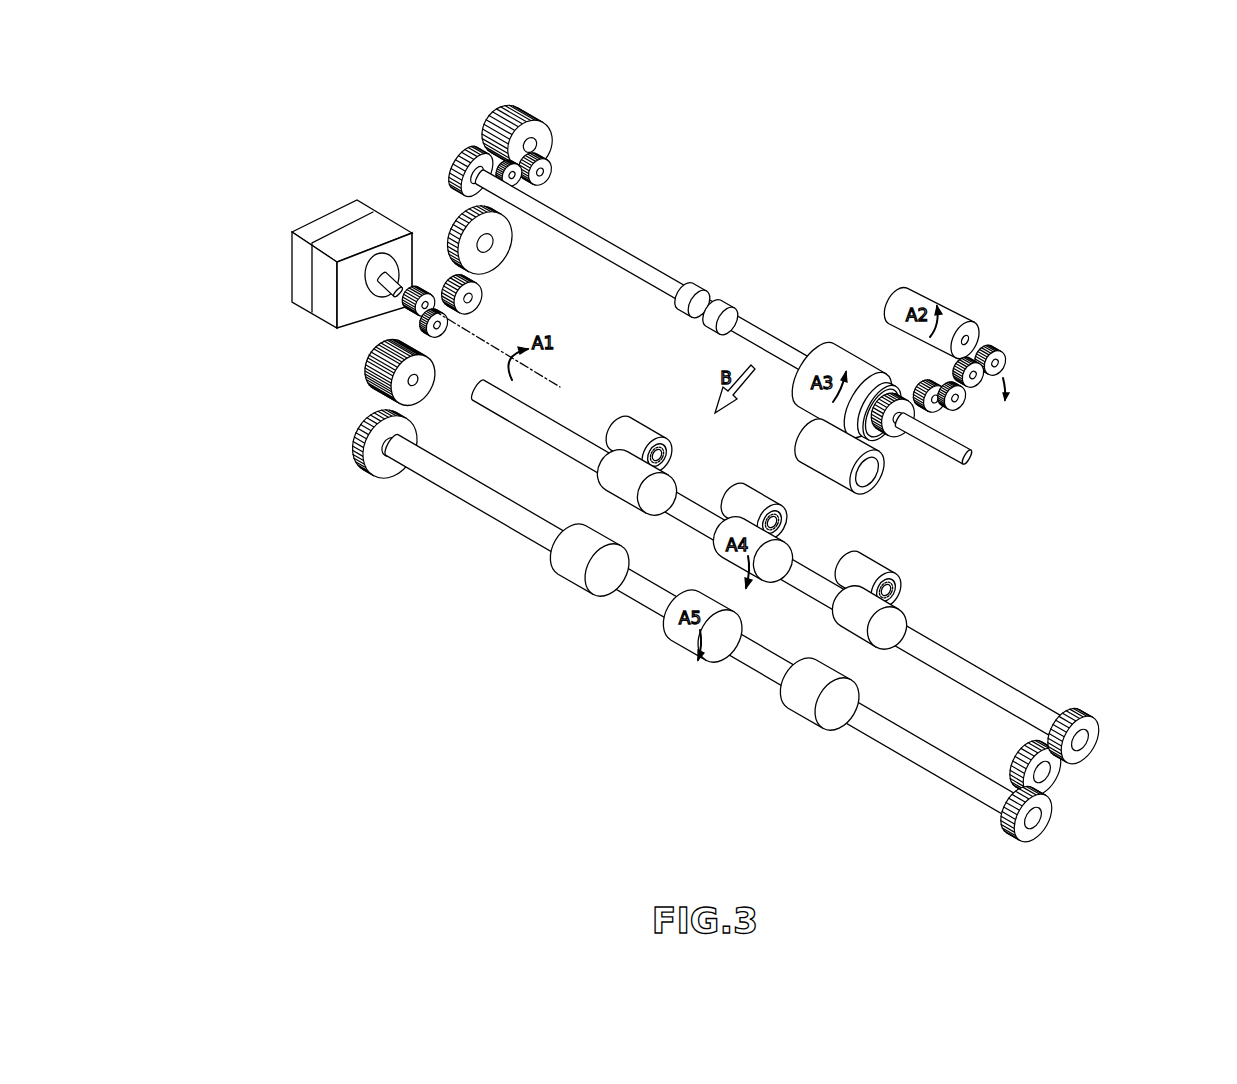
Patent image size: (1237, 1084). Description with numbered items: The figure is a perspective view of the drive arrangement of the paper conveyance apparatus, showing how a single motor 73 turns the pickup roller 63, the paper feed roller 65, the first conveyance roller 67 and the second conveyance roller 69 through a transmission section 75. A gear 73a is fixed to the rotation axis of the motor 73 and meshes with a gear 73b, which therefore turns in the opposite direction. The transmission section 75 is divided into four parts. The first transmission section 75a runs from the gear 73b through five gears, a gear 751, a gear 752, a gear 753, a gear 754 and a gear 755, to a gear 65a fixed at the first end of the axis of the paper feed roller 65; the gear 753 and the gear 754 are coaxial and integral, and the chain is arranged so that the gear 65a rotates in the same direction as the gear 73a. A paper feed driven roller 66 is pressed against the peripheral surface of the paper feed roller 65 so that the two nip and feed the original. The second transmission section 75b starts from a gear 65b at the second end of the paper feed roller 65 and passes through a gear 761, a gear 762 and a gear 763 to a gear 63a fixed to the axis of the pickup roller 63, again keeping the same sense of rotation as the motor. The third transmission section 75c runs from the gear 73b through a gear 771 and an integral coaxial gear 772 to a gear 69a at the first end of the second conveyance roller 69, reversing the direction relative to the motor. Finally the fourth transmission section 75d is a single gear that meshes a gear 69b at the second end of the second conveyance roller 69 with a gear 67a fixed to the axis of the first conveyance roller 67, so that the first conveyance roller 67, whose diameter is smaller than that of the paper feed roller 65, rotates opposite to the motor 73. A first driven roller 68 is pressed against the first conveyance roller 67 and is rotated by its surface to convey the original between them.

The pickup roller 63 is at (947, 320).
The gear 63a is at (997, 347).
The paper feed roller 65 is at (813, 350).
The gear 65a is at (470, 151).
The gear 65b is at (896, 450).
The paper feed driven roller 66 is at (835, 470).
The first conveyance roller 67 is at (723, 560).
The gear 67a is at (1077, 710).
The first driven roller 68 is at (747, 492).
The second conveyance roller 69 is at (687, 640).
The gear 69a is at (353, 433).
The gear 69b is at (1000, 803).
The motor 73 is at (333, 216).
The gear 73a is at (422, 285).
The gear 73b is at (398, 323).
The transmission section 75 is at (663, 432).
The first transmission section 75a is at (549, 132).
The second transmission section 75b is at (955, 402).
The third transmission section 75c is at (372, 390).
The fourth transmission section 75d is at (1017, 742).
The gear 751 is at (480, 290).
The gear 752 is at (492, 242).
The gear 753 is at (540, 138).
The gear 754 is at (552, 163).
The gear 755 is at (553, 188).
The gear 761 is at (944, 410).
The gear 762 is at (962, 407).
The gear 763 is at (981, 389).
The gear 771 is at (368, 378).
The gear 772 is at (420, 398).